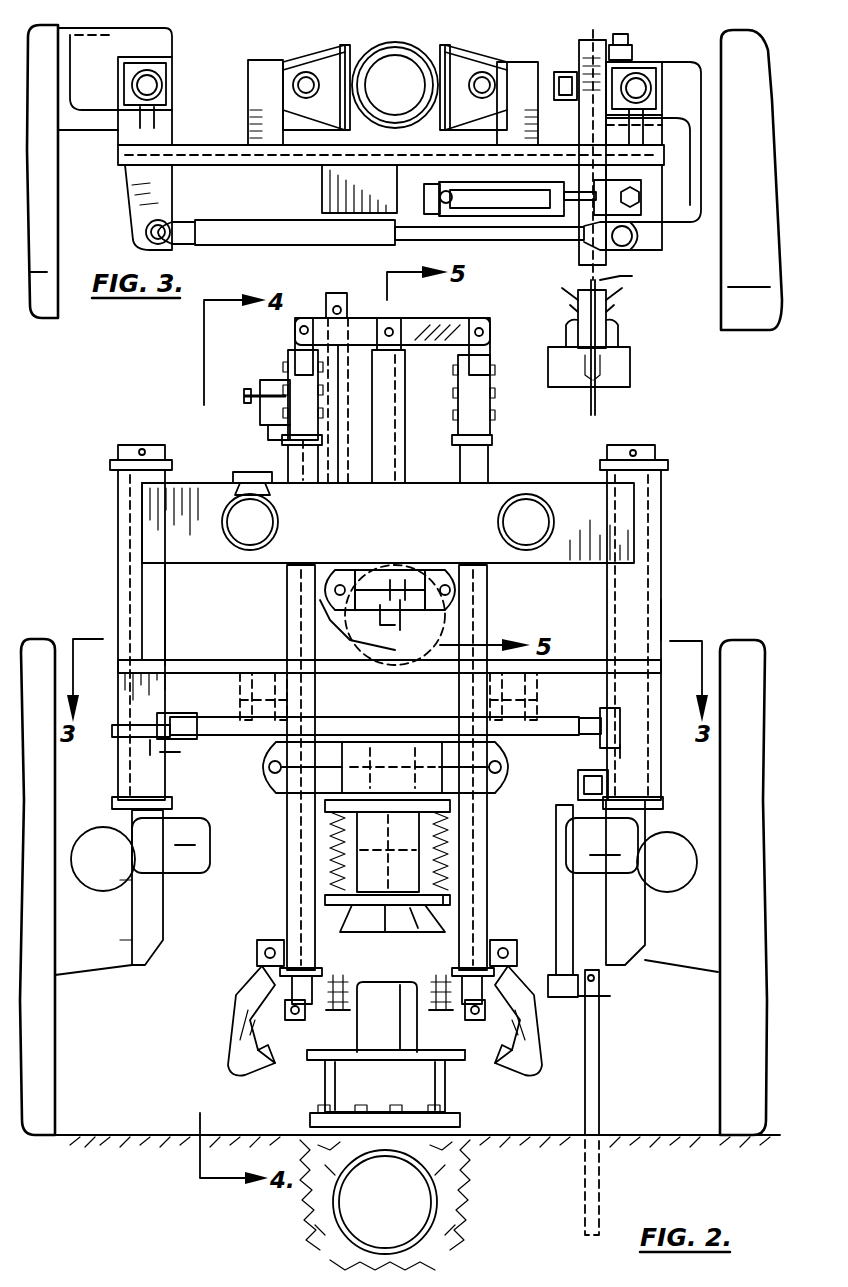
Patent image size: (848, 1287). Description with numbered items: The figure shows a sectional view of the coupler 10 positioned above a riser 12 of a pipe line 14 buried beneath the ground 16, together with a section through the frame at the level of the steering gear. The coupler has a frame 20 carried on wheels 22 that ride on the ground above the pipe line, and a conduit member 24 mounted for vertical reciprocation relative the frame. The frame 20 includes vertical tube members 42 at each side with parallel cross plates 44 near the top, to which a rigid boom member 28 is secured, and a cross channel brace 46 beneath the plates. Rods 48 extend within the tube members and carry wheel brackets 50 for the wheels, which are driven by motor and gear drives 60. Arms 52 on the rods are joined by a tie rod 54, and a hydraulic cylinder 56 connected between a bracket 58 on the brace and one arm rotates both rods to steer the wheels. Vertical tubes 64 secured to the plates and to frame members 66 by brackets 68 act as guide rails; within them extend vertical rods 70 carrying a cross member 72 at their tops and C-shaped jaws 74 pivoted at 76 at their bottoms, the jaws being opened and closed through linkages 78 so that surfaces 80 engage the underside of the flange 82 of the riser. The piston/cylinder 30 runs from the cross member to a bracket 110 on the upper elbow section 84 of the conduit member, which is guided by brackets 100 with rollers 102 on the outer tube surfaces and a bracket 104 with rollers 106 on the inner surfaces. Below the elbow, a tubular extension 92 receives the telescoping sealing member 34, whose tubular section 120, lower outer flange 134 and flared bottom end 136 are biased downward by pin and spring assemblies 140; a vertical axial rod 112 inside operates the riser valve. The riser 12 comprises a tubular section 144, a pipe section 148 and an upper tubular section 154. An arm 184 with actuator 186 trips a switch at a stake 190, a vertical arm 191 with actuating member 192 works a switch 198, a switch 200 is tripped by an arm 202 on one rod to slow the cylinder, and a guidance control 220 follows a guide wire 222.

In FIG. 2, the coupler 10 is at (690, 500).
In FIG. 2, the riser 12 is at (318, 1085).
In FIG. 2, the pipe line 14 is at (340, 1200).
In FIG. 2, the ground 16 is at (640, 1135).
In FIG. 2, the frame 20 is at (668, 628).
In FIG. 3, the wheels 22 is at (37, 322).
In FIG. 2, the wheels 22 is at (50, 1028).
In FIG. 2, the conduit member 24 is at (410, 632).
In FIG. 2, the boom member 28 is at (222, 524).
In FIG. 2, the piston/cylinder 30 is at (398, 403).
In FIG. 2, the sealing member 34 is at (447, 910).
In FIG. 3, the vertical tube members 42 is at (172, 78).
In FIG. 2, the vertical tube members 42 is at (118, 510).
In FIG. 2, the cross plates 44 is at (205, 565).
In FIG. 3, the cross channel brace 46 is at (205, 165).
In FIG. 2, the cross channel brace 46 is at (188, 672).
In FIG. 3, the rods 48 is at (155, 72).
In FIG. 2, the rods 48 is at (160, 790).
In FIG. 2, the wheel brackets 50 is at (140, 968).
In FIG. 3, the arms 52 is at (128, 218).
In FIG. 2, the arms 52 is at (125, 745).
In FIG. 3, the tie rod 54 is at (255, 222).
In FIG. 2, the tie rod 54 is at (265, 736).
In FIG. 3, the hydraulic cylinder 56 is at (515, 208).
In FIG. 3, the bracket 58 is at (395, 215).
In FIG. 3, the motor and gear drives 60 is at (100, 104).
In FIG. 2, the motor and gear drives 60 is at (198, 840).
In FIG. 3, the vertical tubes 64 is at (425, 92).
In FIG. 2, the vertical tubes 64 is at (488, 462).
In FIG. 3, the frame members 66 is at (248, 90).
In FIG. 2, the frame members 66 is at (245, 680).
In FIG. 3, the brackets 68 is at (296, 62).
In FIG. 3, the vertical rods 70 is at (305, 90).
In FIG. 2, the vertical rods 70 is at (288, 360).
In FIG. 2, the cross member 72 is at (362, 318).
In FIG. 2, the C-shaped jaws 74 is at (228, 1050).
In FIG. 2, the pivot 76 is at (292, 1022).
In FIG. 2, the linkages 78 is at (262, 970).
In FIG. 2, the surfaces 80 is at (276, 1065).
In FIG. 2, the flange 82 is at (452, 1065).
In FIG. 3, the upper elbow section 84 is at (399, 40).
In FIG. 2, the tubular extension 92 is at (357, 858).
In FIG. 3, the brackets 100 is at (320, 55).
In FIG. 2, the brackets 100 is at (280, 793).
In FIG. 2, the rollers 102 is at (250, 770).
In FIG. 2, the bracket 104 is at (430, 610).
In FIG. 2, the rollers 106 is at (320, 592).
In FIG. 2, the bracket 110 is at (315, 618).
In FIG. 2, the vertical axial rod 112 is at (450, 822).
In FIG. 2, the tubular section 120 is at (325, 900).
In FIG. 2, the lower outer flange 134 is at (345, 912).
In FIG. 2, the flared bottom end 136 is at (368, 932).
In FIG. 2, the pin and spring assemblies 140 is at (455, 845).
In FIG. 2, the tubular section 144 is at (445, 1160).
In FIG. 2, the pipe section 148 is at (372, 1090).
In FIG. 2, the tubular section 154 is at (375, 1040).
In FIG. 3, the arm 184 is at (580, 95).
In FIG. 2, the arm 184 is at (556, 905).
In FIG. 3, the actuator 186 is at (612, 40).
In FIG. 2, the actuator 186 is at (598, 985).
In FIG. 3, the stake 190 is at (590, 180).
In FIG. 2, the stake 190 is at (598, 1078).
In FIG. 2, the vertical arm 191 is at (340, 390).
In FIG. 2, the actuating member 192 is at (333, 293).
In FIG. 2, the switch 198 is at (238, 472).
In FIG. 2, the switch 200 is at (262, 380).
In FIG. 2, the arm 202 is at (245, 395).
In FIG. 3, the guidance control 220 is at (630, 368).
In FIG. 3, the guide wire 222 is at (634, 276).
In FIG. 2, the guide wire 222 is at (600, 980).